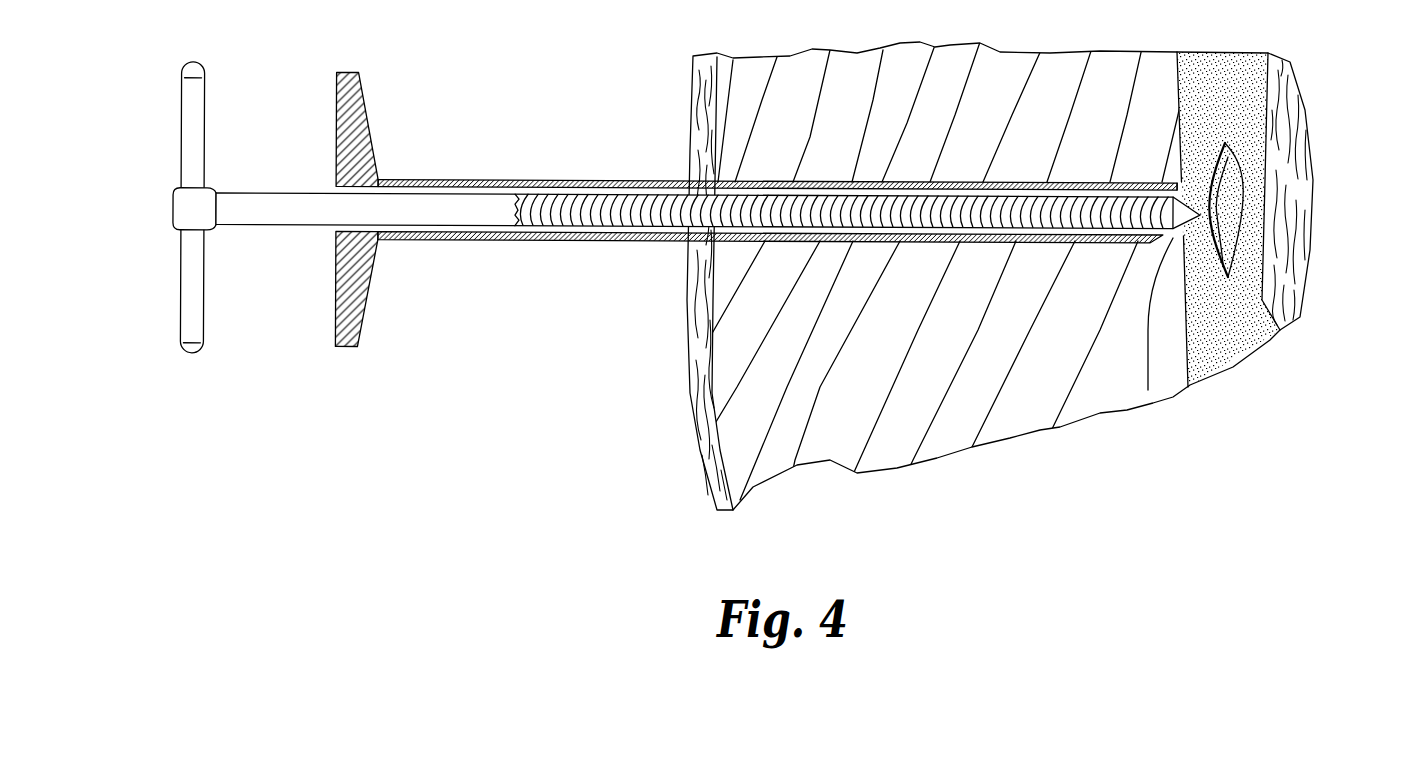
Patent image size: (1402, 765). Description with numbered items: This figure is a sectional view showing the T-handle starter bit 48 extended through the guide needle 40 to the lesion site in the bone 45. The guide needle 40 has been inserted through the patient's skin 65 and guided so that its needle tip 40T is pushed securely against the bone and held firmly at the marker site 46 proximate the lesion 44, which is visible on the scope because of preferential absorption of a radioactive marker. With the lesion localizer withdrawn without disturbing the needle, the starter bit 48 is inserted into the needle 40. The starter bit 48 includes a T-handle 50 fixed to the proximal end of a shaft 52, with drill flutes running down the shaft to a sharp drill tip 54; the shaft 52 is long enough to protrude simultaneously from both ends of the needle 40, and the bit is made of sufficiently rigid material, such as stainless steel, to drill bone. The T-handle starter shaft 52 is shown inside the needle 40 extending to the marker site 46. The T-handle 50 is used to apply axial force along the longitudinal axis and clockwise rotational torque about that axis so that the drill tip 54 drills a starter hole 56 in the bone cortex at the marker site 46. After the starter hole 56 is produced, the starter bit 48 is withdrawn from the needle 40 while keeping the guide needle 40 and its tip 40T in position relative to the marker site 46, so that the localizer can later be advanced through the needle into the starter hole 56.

The guide needle 40 is at (587, 181).
The needle tip 40T is at (1177, 187).
The lesion 44 is at (1206, 212).
The bone 45 is at (1223, 80).
The marker site 46 is at (1148, 390).
The starter bit 48 is at (639, 212).
The T-handle 50 is at (197, 308).
The shaft 52 is at (560, 207).
The drill tip 54 is at (1188, 387).
The starter hole 56 is at (1148, 243).
The skin 65 is at (988, 265).